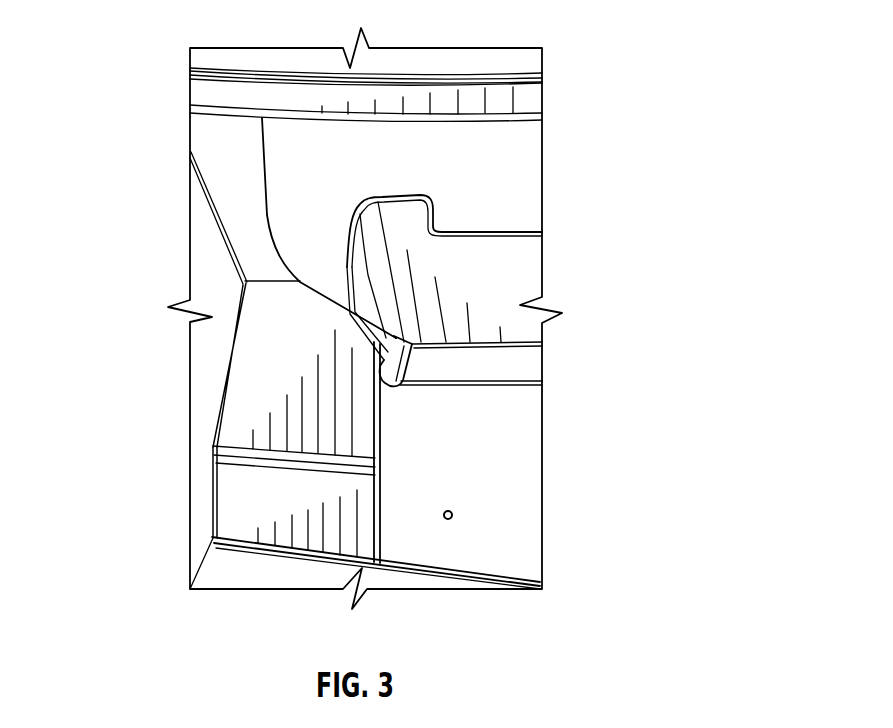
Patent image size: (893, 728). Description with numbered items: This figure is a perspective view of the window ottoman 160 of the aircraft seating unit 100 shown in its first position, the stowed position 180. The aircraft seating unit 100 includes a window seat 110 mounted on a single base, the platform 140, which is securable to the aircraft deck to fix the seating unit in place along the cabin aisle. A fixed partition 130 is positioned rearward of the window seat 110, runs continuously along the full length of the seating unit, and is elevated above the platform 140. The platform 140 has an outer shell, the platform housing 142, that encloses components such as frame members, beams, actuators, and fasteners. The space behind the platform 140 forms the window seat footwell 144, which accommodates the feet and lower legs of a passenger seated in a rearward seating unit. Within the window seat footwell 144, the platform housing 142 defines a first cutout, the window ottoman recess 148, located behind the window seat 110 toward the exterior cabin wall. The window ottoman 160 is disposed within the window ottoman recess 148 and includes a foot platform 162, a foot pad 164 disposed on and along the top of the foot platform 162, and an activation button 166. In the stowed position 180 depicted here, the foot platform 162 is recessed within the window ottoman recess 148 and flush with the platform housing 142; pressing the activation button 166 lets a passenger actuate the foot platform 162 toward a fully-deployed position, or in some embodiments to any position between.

The aircraft seating unit 100 is at (126, 38).
The partition 130 is at (226, 62).
The window seat 110 is at (308, 219).
The platform 140 is at (527, 448).
The stowed position 180 is at (208, 276).
The foot pad 164 is at (252, 360).
The window ottoman 160 is at (198, 412).
The foot platform 162 is at (250, 490).
The window ottoman recess 148 is at (383, 500).
The activation button 166 is at (452, 512).
The platform housing 142 is at (406, 536).
The window seat footwell 144 is at (440, 608).